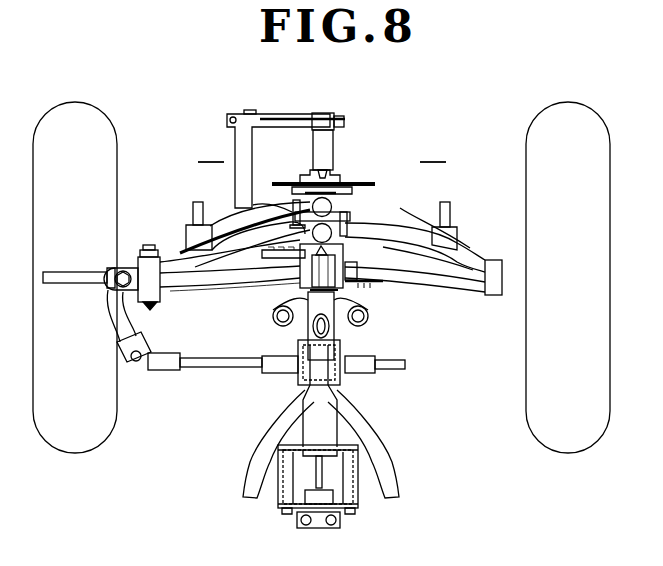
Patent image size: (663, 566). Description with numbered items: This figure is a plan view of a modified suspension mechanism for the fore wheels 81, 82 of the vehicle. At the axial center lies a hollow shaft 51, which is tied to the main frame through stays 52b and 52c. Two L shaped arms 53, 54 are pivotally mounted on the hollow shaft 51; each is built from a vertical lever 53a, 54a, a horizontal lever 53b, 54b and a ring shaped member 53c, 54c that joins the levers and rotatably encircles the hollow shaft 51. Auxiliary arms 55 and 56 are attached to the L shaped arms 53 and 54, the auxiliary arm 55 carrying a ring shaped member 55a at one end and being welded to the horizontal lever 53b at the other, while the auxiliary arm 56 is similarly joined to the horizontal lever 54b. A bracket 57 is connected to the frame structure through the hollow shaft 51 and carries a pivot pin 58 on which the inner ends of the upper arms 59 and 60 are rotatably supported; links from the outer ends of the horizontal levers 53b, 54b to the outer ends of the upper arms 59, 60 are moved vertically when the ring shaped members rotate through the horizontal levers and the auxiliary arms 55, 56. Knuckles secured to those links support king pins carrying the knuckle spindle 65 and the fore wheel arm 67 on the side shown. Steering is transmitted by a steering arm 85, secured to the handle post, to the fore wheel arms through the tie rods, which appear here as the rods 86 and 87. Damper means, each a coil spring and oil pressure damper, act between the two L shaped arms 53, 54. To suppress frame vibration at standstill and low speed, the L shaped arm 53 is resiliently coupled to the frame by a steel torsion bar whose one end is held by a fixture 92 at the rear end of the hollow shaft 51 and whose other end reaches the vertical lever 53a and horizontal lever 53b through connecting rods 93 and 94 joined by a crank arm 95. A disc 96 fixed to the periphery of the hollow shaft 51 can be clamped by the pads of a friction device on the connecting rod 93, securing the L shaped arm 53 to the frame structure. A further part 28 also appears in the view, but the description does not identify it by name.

The pivot shaft 28 is at (330, 324).
The hollow shaft 51 is at (310, 285).
The stay 52b is at (276, 323).
The stay 52c is at (258, 446).
The L shaped arm 53 is at (226, 203).
The vertical lever 53a is at (332, 204).
The horizontal lever 53b is at (218, 216).
The ring shaped member 53c is at (290, 202).
The L shaped arm 54 is at (420, 198).
The vertical lever 54a is at (346, 238).
The horizontal lever 54b is at (396, 214).
The ring shaped member 54c is at (187, 240).
The auxiliary arm 55 is at (212, 258).
The ring shaped member 55a is at (258, 290).
The auxiliary arm 56 is at (482, 298).
The bracket 57 is at (312, 318).
The pivot pin 58 is at (355, 282).
The upper arm 59 is at (167, 302).
The upper arm 60 is at (380, 284).
The knuckle spindle 65 is at (67, 270).
The fore wheel arm 67 is at (109, 321).
The fore wheel 81 is at (67, 453).
The fore wheel 82 is at (568, 453).
The steering arm 85 is at (308, 372).
The left tie rod 86 is at (205, 368).
The right tie rod 87 is at (390, 373).
The fixture 92 is at (292, 524).
The connecting rod 93 is at (314, 145).
The connecting rod 94 is at (232, 132).
The crank arm 95 is at (281, 118).
The disc 96 is at (360, 182).